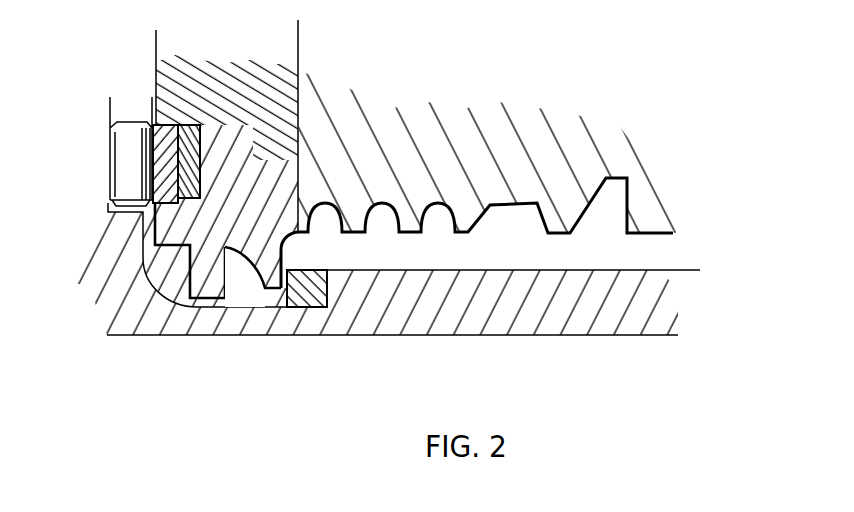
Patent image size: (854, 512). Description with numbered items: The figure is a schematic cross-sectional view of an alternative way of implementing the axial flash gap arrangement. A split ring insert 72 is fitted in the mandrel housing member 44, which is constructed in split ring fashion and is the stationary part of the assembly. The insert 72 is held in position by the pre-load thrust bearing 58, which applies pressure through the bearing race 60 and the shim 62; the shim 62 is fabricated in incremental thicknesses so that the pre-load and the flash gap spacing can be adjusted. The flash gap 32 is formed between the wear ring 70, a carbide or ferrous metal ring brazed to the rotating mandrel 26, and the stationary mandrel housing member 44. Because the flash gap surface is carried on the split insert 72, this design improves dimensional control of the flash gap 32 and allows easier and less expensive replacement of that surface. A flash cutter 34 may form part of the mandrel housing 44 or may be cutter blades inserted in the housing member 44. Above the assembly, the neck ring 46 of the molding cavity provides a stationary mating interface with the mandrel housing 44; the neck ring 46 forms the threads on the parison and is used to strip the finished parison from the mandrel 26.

The mandrel 26 is at (560, 313).
The flash gap 32 is at (283, 295).
The flash cutter 34 is at (197, 262).
The mandrel housing member 44 is at (279, 56).
The neck ring 46 is at (528, 123).
The pre-load thrust bearing 58 is at (132, 162).
The bearing race 60 is at (165, 134).
The shim 62 is at (185, 136).
The wear ring 70 is at (312, 297).
The split ring insert 72 is at (235, 250).